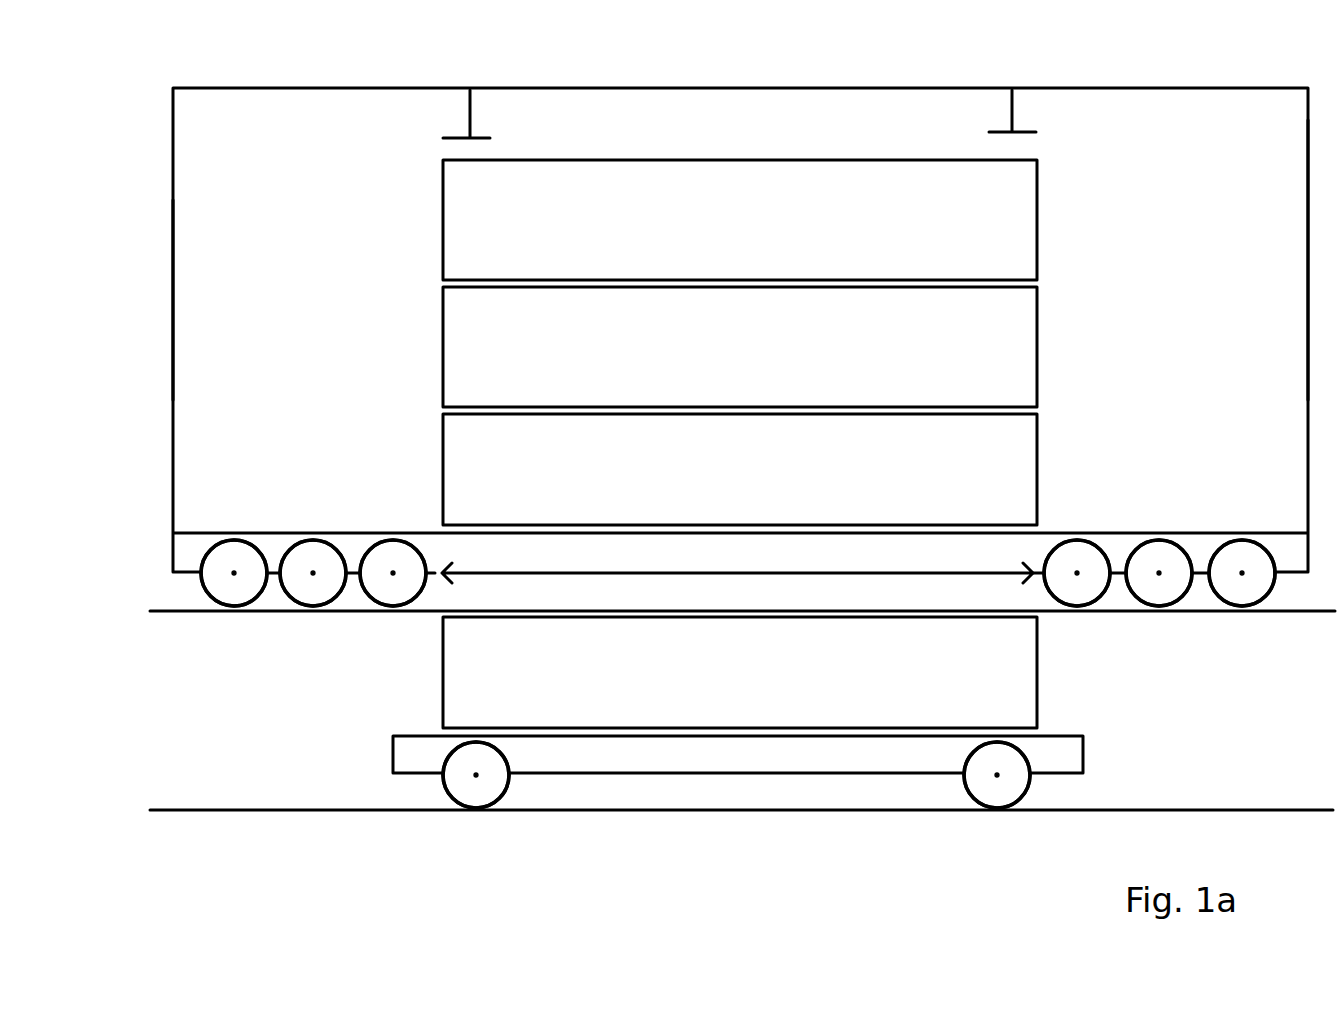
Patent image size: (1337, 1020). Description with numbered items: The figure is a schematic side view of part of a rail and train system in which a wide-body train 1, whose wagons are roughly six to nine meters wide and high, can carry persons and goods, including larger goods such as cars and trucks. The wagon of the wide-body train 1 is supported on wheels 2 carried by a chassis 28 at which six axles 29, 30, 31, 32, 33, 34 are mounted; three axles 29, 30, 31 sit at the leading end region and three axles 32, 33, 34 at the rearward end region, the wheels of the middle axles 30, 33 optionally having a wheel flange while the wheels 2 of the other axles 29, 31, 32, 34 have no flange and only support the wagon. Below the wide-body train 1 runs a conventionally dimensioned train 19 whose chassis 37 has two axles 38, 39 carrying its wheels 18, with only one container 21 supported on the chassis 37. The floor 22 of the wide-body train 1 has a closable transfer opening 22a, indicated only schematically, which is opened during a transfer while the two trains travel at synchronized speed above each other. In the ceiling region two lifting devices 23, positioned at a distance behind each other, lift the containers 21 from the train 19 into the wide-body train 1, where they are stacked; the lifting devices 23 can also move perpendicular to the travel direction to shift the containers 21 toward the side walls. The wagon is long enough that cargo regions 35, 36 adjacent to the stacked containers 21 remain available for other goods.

The wide-body train 1 is at (1161, 86).
The wheels 2 is at (392, 548).
The wheels 18 is at (468, 777).
The train 19 is at (775, 778).
The container 21 is at (1010, 232).
The floor 22 is at (186, 585).
The transfer opening 22a is at (603, 563).
The lifting device 23 is at (470, 123).
The chassis 28 is at (1193, 523).
The axle 29 is at (234, 578).
The axle 30 is at (313, 578).
The axle 31 is at (394, 578).
The axle 32 is at (1078, 577).
The axle 33 is at (1160, 577).
The axle 34 is at (1243, 577).
The cargo region 35 is at (218, 251).
The cargo region 36 is at (1208, 145).
The chassis 37 is at (1085, 757).
The axle 38 is at (478, 776).
The axle 39 is at (997, 777).